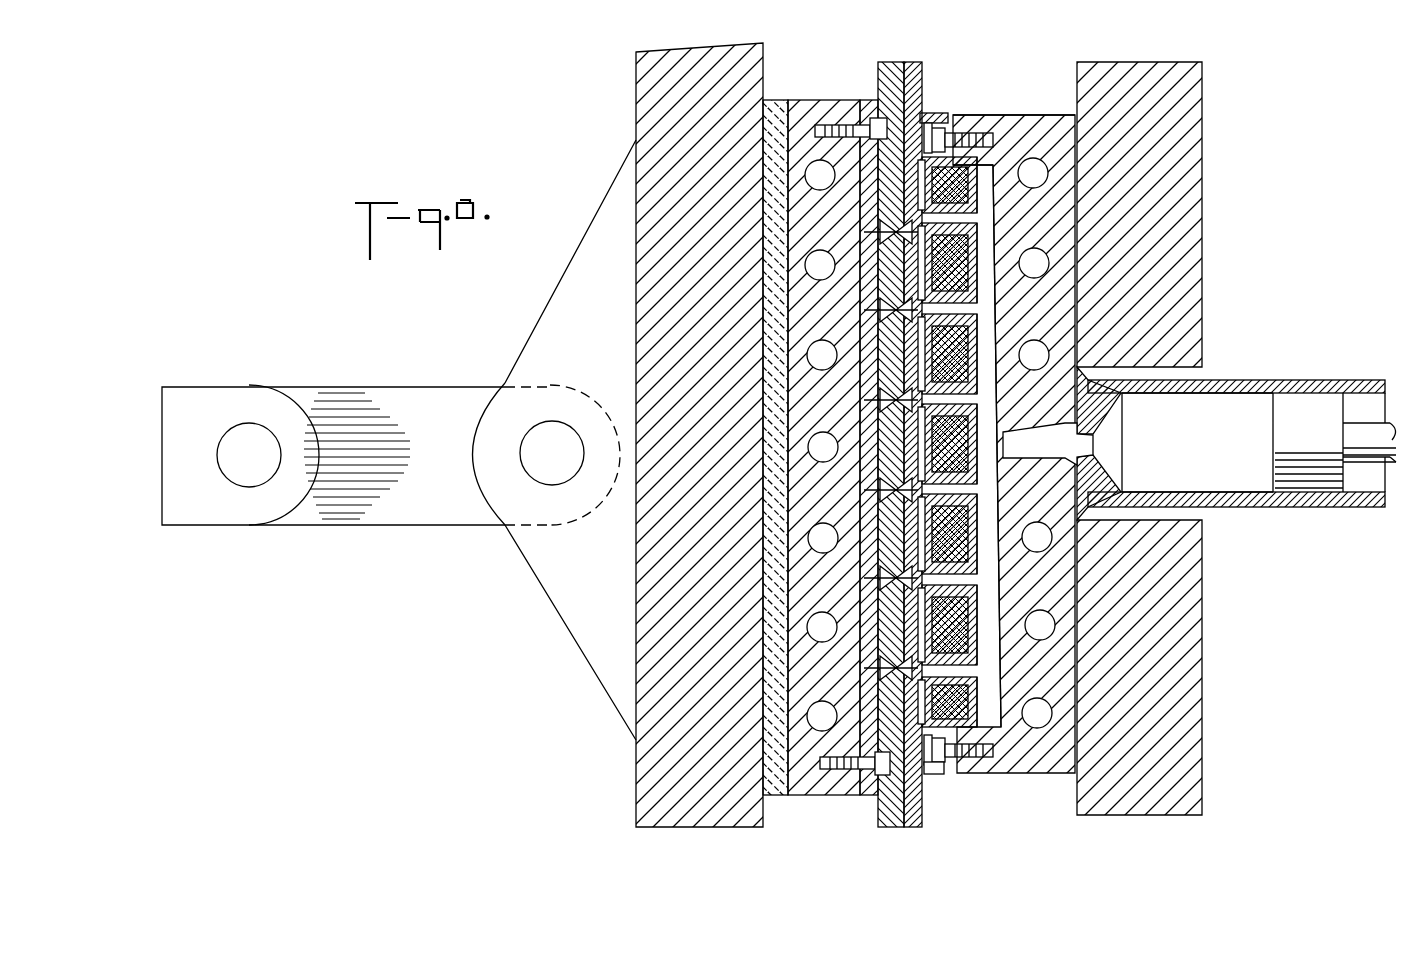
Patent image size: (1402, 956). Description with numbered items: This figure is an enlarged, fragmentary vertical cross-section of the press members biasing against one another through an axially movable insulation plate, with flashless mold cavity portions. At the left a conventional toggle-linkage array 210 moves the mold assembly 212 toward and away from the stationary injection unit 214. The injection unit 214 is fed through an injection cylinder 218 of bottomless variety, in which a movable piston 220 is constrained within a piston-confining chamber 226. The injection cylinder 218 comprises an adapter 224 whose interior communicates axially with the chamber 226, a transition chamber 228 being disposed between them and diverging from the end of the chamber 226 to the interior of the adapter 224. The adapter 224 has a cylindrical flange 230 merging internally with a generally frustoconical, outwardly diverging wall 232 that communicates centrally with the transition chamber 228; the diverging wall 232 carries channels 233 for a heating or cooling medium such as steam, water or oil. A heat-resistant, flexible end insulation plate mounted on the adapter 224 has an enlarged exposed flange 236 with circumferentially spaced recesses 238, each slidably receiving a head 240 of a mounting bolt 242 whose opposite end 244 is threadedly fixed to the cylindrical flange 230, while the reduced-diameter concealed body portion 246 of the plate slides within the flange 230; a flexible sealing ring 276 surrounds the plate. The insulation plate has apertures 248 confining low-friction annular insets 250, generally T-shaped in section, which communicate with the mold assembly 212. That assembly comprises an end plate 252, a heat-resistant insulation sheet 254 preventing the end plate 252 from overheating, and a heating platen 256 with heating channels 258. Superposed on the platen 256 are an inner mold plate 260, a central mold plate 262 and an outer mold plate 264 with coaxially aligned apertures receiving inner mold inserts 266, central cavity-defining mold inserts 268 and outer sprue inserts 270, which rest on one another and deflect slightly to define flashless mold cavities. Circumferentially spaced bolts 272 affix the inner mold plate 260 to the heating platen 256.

The toggle-linkage array 210 is at (350, 515).
The mold assembly 212 is at (763, 455).
The injection unit 214 is at (1174, 441).
The injection cylinder 218 is at (1368, 380).
The piston 220 is at (1320, 480).
The adapter 224 is at (1046, 788).
The piston-confining chamber 226 is at (1257, 490).
The transition chamber 228 is at (1042, 438).
The cylindrical flange 230 is at (980, 774).
The frustoconical diverging wall 232 is at (1001, 592).
The channels 233 is at (1035, 248).
The exposed flange 236 is at (935, 112).
The recesses 238 is at (938, 122).
The head 240 is at (947, 442).
The mounting bolt 242 is at (936, 775).
The opposite end 244 is at (990, 138).
The concealed body portion 246 is at (977, 518).
The apertures 248 is at (1007, 656).
The low-friction annular insets 250 is at (994, 162).
The end plate 252 is at (636, 772).
The insulation sheet 254 is at (767, 128).
The heating platen 256 is at (792, 100).
The heating channels 258 is at (830, 253).
The inner mold plate 260 is at (870, 796).
The central mold plate 262 is at (896, 828).
The outer mold plate 264 is at (912, 828).
The inner mold inserts 266 is at (882, 398).
The central cavity-defining mold inserts 268 is at (893, 546).
The outer sprue inserts 270 is at (878, 232).
The bolts 272 is at (822, 772).
The sealing ring 276 is at (1040, 162).